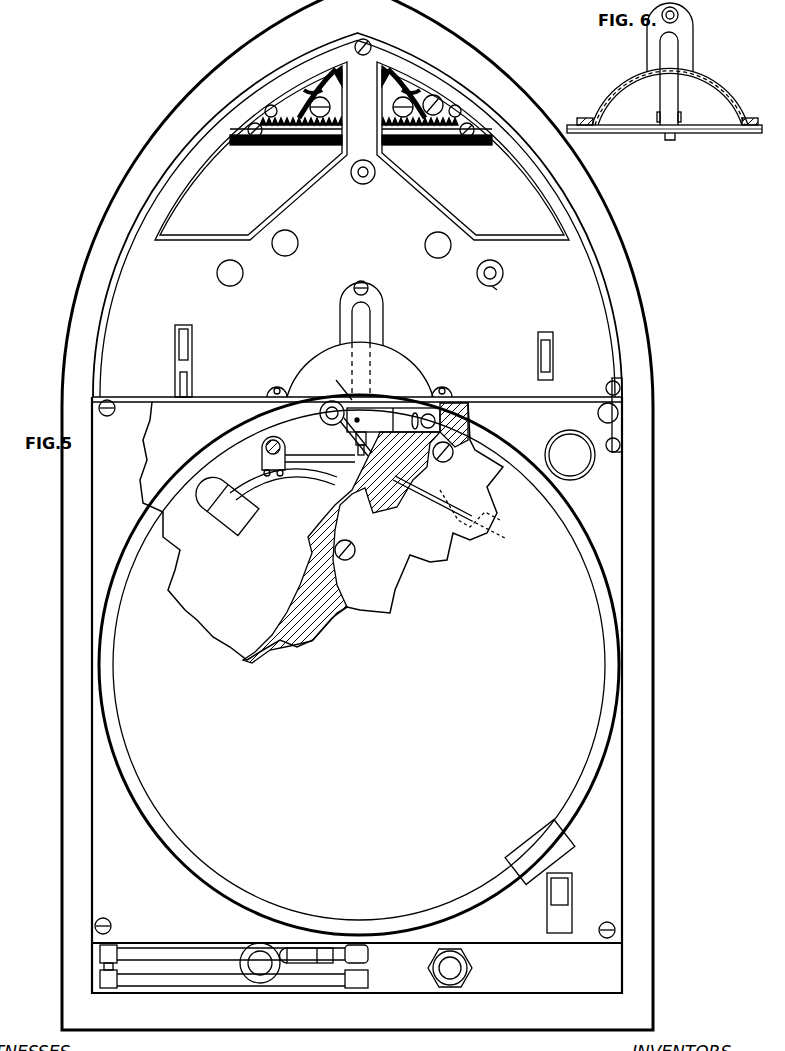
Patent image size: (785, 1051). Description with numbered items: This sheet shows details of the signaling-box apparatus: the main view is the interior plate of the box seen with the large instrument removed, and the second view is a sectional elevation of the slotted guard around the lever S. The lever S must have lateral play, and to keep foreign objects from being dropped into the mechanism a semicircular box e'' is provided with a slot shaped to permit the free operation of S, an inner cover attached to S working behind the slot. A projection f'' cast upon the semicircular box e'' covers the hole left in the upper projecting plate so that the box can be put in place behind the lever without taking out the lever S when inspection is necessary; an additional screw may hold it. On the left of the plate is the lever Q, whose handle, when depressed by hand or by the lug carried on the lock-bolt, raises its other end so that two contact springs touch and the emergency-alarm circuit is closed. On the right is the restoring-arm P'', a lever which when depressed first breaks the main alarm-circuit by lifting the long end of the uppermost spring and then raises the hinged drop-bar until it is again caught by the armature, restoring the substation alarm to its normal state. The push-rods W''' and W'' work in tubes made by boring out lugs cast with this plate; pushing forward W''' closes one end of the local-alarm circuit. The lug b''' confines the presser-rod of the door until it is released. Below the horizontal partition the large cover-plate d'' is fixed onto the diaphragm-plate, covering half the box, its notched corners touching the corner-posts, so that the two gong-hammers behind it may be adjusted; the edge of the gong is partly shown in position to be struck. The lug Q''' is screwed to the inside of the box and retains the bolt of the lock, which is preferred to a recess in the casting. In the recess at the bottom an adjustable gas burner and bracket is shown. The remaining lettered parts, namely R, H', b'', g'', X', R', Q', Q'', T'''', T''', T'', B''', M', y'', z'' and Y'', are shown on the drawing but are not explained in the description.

In FIG. 5, the screw R is at (354, 47).
In FIG. 5, the rack bar H' is at (361, 115).
In FIG. 5, the push-rod W''' is at (373, 174).
In FIG. 5, the sector panel b'' is at (362, 151).
In FIG. 5, the lug b''' is at (285, 243).
In FIG. 5, the disk g'' is at (334, 259).
In FIG. 5, the push-rod W'' is at (485, 280).
In FIG. 5, the pivot pin X' is at (502, 291).
In FIG. 5, the projection f'' is at (361, 313).
In FIG. 6, the projection f'' is at (678, 37).
In FIG. 5, the lever S is at (361, 349).
In FIG. 6, the lever S is at (669, 78).
In FIG. 5, the lever Q is at (172, 361).
In FIG. 5, the restoring-arm P'' is at (545, 356).
In FIG. 5, the screw R' is at (355, 669).
In FIG. 5, the pivot Q' is at (331, 385).
In FIG. 5, the semicircular box e'' is at (359, 369).
In FIG. 6, the semicircular box e'' is at (670, 96).
In FIG. 5, the pivot Q'' is at (322, 418).
In FIG. 5, the lever T'''' is at (342, 437).
In FIG. 5, the block T''' is at (407, 429).
In FIG. 5, the bracket T'' is at (308, 456).
In FIG. 5, the ring B''' is at (359, 665).
In FIG. 5, the cover-plate d'' is at (322, 532).
In FIG. 5, the lug Q''' is at (592, 415).
In FIG. 5, the dial M' is at (570, 455).
In FIG. 5, the tag y'' is at (540, 852).
In FIG. 5, the post z'' is at (559, 903).
In FIG. 5, the bottom mechanism Y'' is at (286, 965).